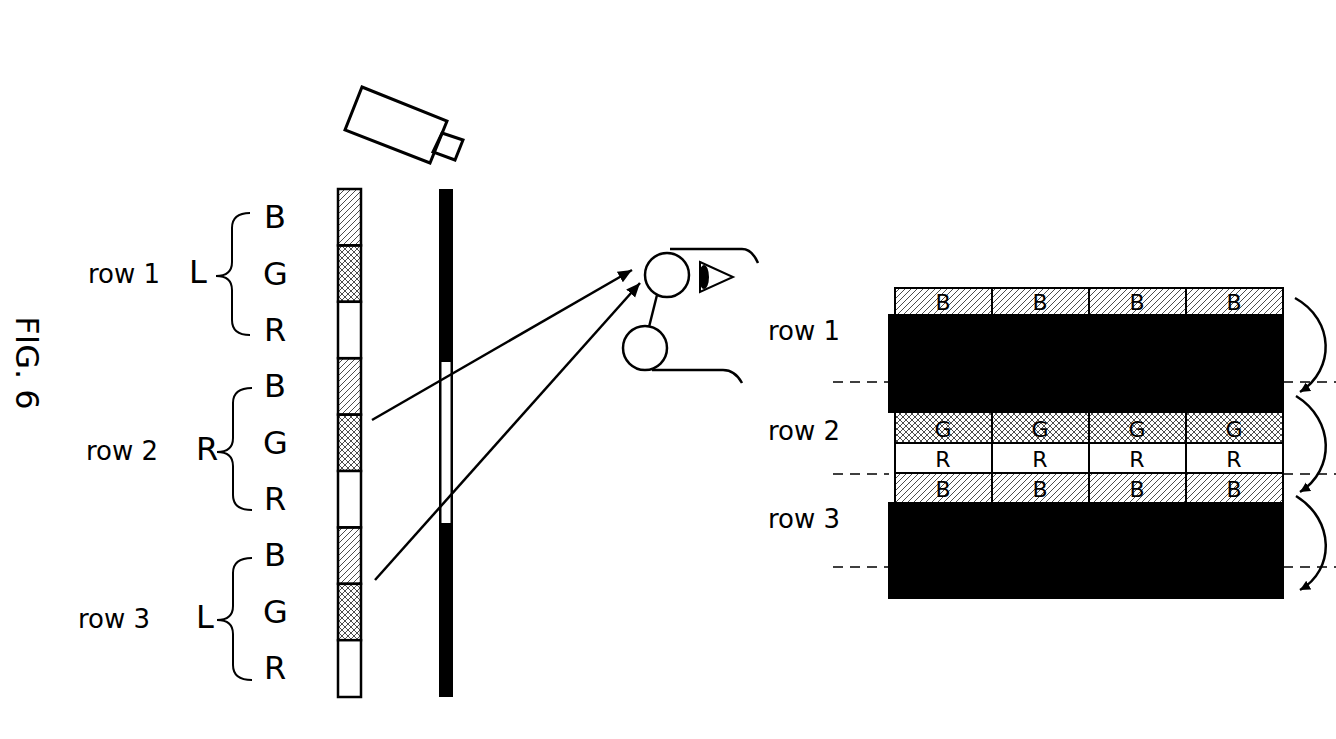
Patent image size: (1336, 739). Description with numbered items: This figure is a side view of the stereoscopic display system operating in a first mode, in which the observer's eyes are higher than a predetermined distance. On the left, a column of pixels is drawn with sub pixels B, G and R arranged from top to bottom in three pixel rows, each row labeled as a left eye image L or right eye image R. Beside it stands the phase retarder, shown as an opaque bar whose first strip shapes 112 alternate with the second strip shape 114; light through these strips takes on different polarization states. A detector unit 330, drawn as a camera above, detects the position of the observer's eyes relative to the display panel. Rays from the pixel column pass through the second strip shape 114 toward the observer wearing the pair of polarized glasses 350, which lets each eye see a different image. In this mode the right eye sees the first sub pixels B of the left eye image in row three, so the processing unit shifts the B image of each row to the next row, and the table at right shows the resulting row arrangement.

The first strip shape 112 is at (455, 263).
The second strip shape 114 is at (451, 473).
The detector unit 330 is at (397, 97).
The pair of polarized glasses 350 is at (685, 240).